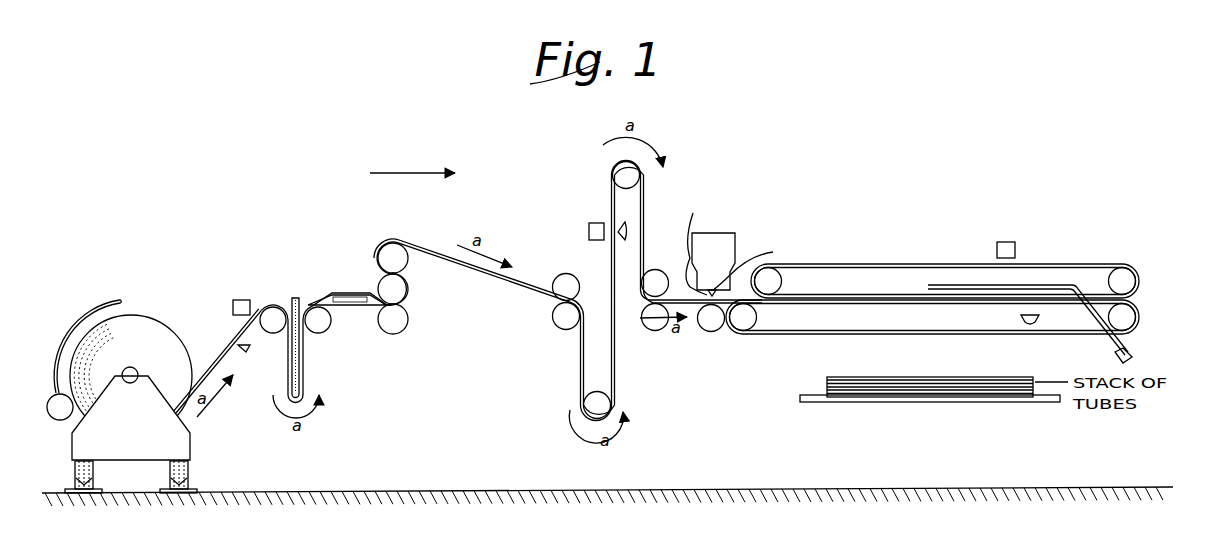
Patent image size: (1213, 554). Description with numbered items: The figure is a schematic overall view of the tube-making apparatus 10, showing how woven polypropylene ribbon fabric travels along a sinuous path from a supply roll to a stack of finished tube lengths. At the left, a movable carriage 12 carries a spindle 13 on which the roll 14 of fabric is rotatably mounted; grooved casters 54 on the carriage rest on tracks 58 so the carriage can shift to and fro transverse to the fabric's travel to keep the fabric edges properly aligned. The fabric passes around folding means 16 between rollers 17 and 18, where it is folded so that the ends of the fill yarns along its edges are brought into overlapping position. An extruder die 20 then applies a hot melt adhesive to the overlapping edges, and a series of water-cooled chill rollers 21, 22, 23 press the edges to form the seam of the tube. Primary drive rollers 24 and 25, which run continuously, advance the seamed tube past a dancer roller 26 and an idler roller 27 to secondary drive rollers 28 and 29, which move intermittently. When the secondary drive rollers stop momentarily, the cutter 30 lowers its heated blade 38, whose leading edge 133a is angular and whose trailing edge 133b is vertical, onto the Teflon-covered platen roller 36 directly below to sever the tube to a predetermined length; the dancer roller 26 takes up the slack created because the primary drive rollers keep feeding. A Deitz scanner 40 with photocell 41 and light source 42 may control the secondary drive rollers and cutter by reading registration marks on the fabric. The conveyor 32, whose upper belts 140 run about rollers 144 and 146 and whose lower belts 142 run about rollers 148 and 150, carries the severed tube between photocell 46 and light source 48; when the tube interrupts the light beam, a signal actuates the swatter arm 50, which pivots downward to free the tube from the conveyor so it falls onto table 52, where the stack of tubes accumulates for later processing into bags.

The tube-making apparatus 10 is at (220, 262).
The movable carriage 12 is at (203, 442).
The spindle 13 is at (133, 383).
The roll of fabric 14 is at (153, 333).
The folding means 16 is at (297, 292).
The roller 17 is at (275, 328).
The roller 18 is at (318, 327).
The extruder die 20 is at (352, 306).
The chill roller 21 is at (397, 323).
The chill roller 22 is at (385, 287).
The chill roller 23 is at (390, 253).
The primary drive roller 24 is at (562, 323).
The primary drive roller 25 is at (562, 280).
The dancer roller 26 is at (590, 407).
The idler roller 27 is at (617, 172).
The secondary drive roller 28 is at (653, 283).
The secondary drive roller 29 is at (652, 327).
The cutter 30 is at (718, 245).
The conveyor 32 is at (867, 254).
The platen roller 36 is at (710, 327).
The blade 38 is at (715, 290).
The Deitz scanner 40 is at (592, 213).
The photocell 41 is at (592, 242).
The light source 42 is at (622, 229).
The photocell 46 is at (1005, 240).
The light source 48 is at (1030, 326).
The swatter arm 50 is at (1038, 285).
The table 52 is at (810, 395).
The grooved casters 54 is at (72, 473).
The tracks 58 is at (90, 497).
The leading edge 133a is at (706, 245).
The trailing edge 133b is at (766, 264).
The upper conveyor belts 140 is at (1104, 263).
The lower conveyor belts 142 is at (785, 335).
The roller 144 is at (772, 282).
The roller 146 is at (1123, 280).
The roller 148 is at (750, 320).
The roller 150 is at (1123, 317).